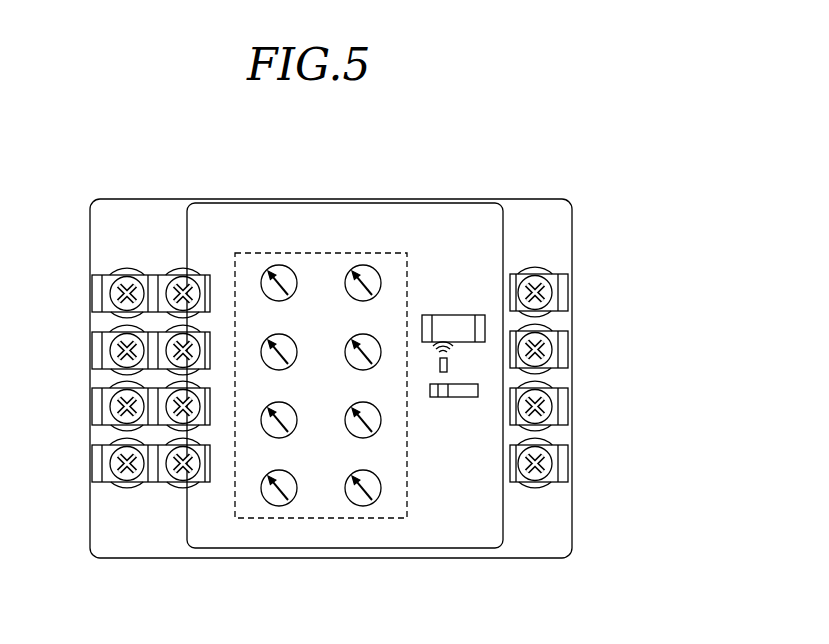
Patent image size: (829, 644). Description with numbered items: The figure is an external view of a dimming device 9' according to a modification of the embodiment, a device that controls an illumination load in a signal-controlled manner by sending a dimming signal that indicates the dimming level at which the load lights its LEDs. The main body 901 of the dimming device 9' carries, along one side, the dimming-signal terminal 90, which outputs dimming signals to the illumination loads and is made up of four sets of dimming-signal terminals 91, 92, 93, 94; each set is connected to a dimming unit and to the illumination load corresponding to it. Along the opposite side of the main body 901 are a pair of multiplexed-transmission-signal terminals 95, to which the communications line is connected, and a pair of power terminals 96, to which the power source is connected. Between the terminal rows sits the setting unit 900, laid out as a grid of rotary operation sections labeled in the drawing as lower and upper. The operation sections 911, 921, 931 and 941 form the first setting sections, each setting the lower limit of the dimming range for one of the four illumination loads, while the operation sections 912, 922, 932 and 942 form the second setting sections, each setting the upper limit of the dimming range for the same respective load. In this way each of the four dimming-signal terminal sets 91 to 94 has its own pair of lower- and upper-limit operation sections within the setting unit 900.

The dimming device 9' is at (366, 339).
The setting unit 900 is at (318, 248).
The main body 901 is at (558, 219).
The dimming-signal terminal 90 is at (106, 377).
The dimming-signal terminal 91 is at (108, 293).
The dimming-signal terminal 92 is at (108, 350).
The dimming-signal terminal 93 is at (108, 407).
The dimming-signal terminal 94 is at (131, 463).
The multiplexed-transmission-signal terminal 95 is at (557, 293).
The power terminal 96 is at (557, 406).
The operation section 911 is at (265, 270).
The operation section 912 is at (380, 273).
The operation section 921 is at (263, 348).
The operation section 922 is at (381, 343).
The operation section 931 is at (262, 424).
The operation section 932 is at (381, 423).
The operation section 941 is at (276, 507).
The operation section 942 is at (381, 490).